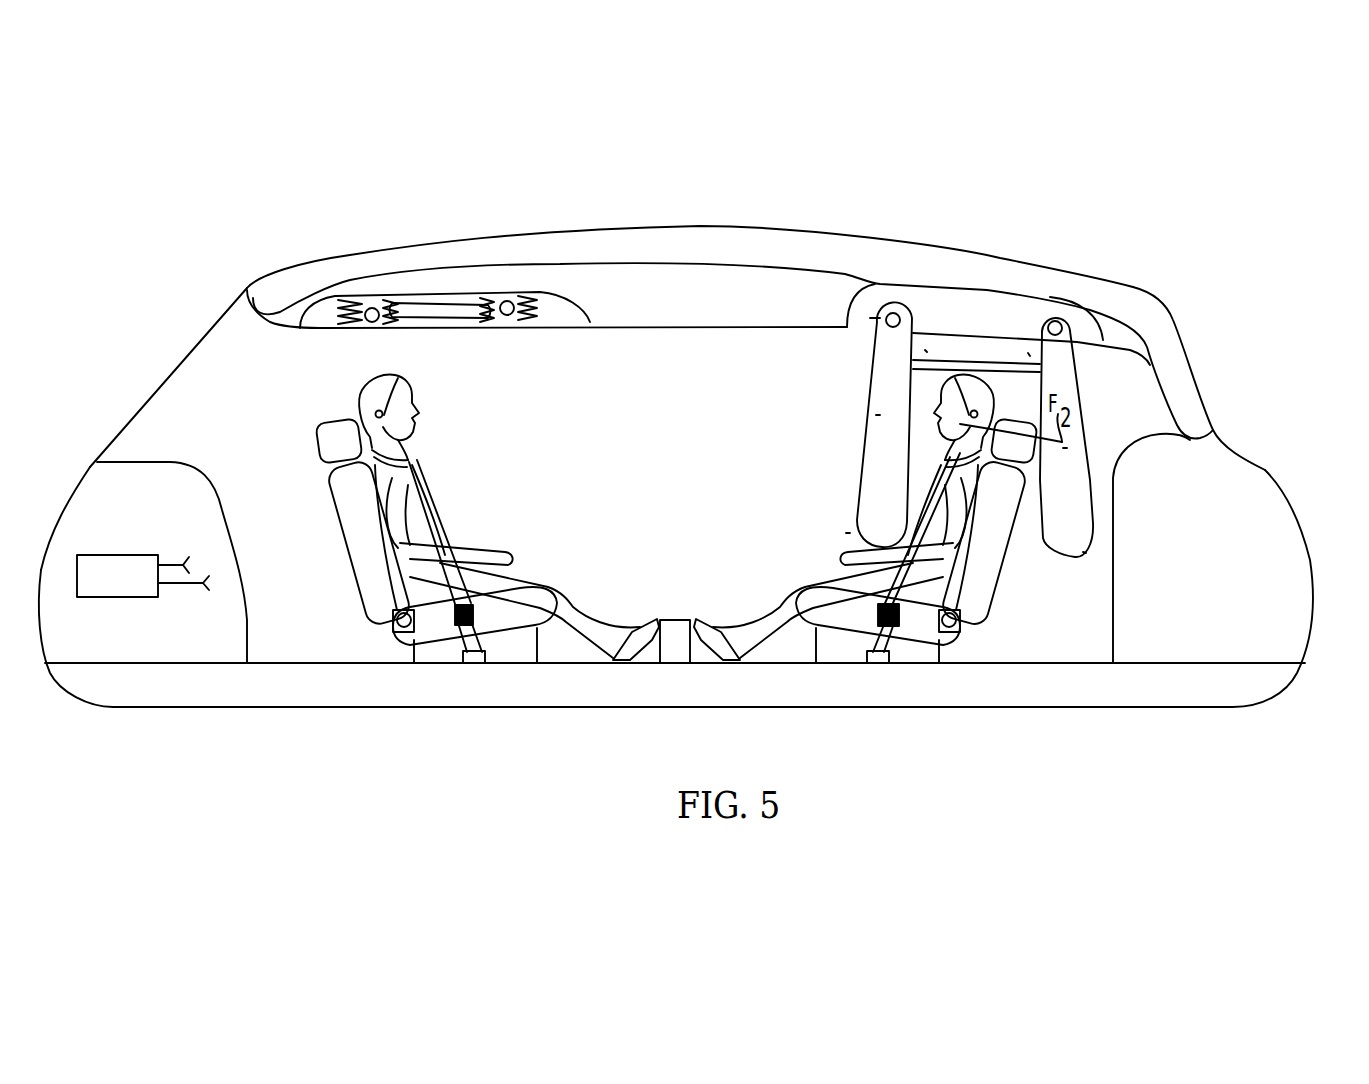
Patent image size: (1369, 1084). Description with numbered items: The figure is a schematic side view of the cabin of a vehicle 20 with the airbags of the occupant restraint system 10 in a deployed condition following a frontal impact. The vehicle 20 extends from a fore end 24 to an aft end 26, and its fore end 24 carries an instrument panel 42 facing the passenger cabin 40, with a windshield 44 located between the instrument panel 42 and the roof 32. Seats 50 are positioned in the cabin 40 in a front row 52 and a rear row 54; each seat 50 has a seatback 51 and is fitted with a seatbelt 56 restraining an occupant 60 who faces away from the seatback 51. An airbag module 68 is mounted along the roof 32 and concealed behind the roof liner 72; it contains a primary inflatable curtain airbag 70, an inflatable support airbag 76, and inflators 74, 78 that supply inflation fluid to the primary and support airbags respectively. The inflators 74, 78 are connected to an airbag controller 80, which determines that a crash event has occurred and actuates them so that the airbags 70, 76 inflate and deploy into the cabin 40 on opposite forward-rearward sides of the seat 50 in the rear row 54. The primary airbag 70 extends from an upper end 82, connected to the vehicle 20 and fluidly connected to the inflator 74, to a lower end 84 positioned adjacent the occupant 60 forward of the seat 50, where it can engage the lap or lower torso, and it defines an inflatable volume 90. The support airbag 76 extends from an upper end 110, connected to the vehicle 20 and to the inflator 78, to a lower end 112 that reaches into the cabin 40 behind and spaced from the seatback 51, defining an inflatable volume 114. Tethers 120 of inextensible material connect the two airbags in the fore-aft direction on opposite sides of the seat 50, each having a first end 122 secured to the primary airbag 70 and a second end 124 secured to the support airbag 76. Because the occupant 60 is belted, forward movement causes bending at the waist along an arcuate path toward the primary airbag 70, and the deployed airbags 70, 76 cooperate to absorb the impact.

The occupant restraint system 10 is at (858, 292).
The vehicle 20 is at (1272, 580).
The first or fore end 24 is at (110, 402).
The second or aft end 26 is at (1252, 410).
The roof 32 is at (762, 246).
The passenger compartment or cabin 40 is at (681, 475).
The instrument panel 42 is at (193, 462).
The windshield or windscreen 44 is at (170, 375).
The seat 50 is at (370, 580).
The seatback 51 is at (350, 560).
The front row 52 is at (474, 672).
The rear row 54 is at (878, 672).
The seatbelt 56 is at (440, 537).
The occupant 60 is at (410, 492).
The airbag module 68 is at (560, 280).
The primary inflatable curtain airbag 70 is at (492, 298).
The roof liner 72 is at (628, 327).
The inflator 74 is at (507, 318).
The inflatable support airbag 76 is at (344, 330).
The inflator 78 is at (370, 306).
The airbag controller 80 is at (120, 565).
The upper end 82 is at (868, 318).
The lower end 84 is at (840, 533).
The inflatable volume 90 is at (875, 415).
The upper end 110 is at (1092, 350).
The lower end 112 is at (1094, 556).
The inflatable volume 114 is at (1078, 448).
The tether 120 is at (440, 295).
The first end 122 is at (925, 345).
The second end 124 is at (1026, 350).